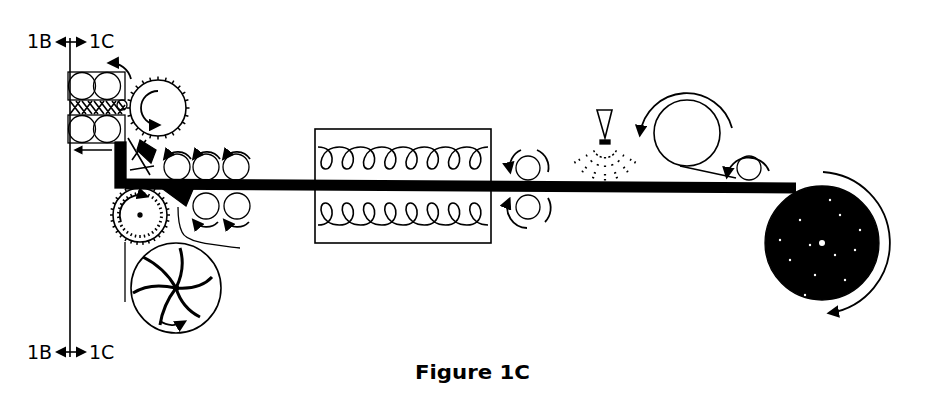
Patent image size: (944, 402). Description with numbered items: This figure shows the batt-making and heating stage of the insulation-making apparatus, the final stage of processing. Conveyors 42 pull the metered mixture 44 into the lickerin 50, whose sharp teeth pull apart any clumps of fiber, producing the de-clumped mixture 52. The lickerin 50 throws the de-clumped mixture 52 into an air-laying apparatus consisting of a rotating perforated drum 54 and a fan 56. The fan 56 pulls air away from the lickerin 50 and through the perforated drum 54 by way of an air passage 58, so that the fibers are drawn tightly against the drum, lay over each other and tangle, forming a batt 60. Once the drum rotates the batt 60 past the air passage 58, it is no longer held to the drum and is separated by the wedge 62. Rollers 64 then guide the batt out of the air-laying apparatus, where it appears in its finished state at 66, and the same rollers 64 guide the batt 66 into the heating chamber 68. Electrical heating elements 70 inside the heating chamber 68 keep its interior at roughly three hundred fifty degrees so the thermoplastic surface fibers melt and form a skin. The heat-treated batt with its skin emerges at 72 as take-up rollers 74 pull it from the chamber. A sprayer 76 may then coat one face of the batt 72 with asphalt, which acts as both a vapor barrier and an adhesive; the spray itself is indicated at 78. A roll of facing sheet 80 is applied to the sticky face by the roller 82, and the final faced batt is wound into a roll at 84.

The conveyors 42 is at (70, 118).
The metered mixture 44 is at (70, 103).
The lickerin 50 is at (186, 88).
The de-clumped mixture 52 is at (108, 158).
The perforated drum 54 is at (118, 222).
The fan 56 is at (152, 284).
The air passage 58 is at (142, 218).
The batt 60 is at (110, 188).
The wedge 62 is at (222, 233).
The rollers 64 is at (253, 163).
The finished batt 66 is at (297, 168).
The heating chamber 68 is at (360, 127).
The electrical heating elements 70 is at (470, 147).
The heat-treated batt with skin 72 is at (502, 166).
The take-up rollers 74 is at (528, 155).
The sprayer 76 is at (603, 110).
The spray 78 is at (585, 158).
The roll of facing sheet 80 is at (675, 113).
The roller 82 is at (760, 157).
The roll 84 is at (765, 225).